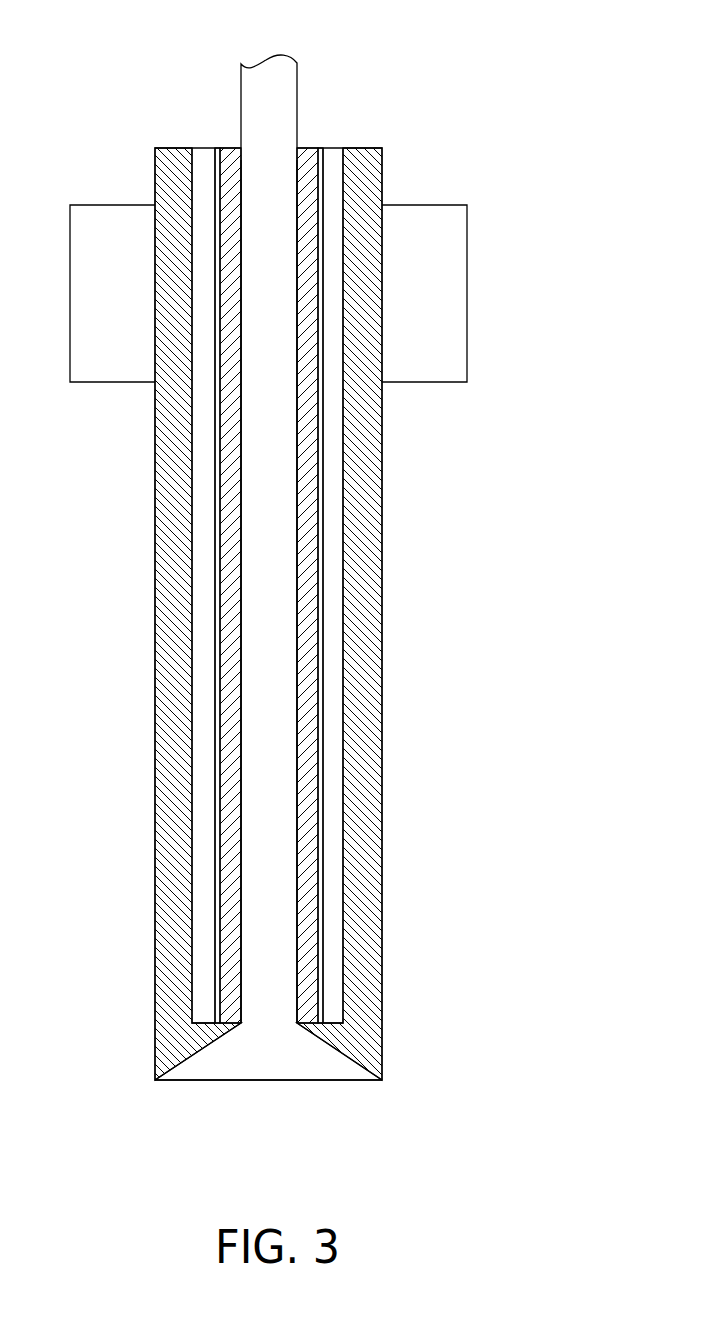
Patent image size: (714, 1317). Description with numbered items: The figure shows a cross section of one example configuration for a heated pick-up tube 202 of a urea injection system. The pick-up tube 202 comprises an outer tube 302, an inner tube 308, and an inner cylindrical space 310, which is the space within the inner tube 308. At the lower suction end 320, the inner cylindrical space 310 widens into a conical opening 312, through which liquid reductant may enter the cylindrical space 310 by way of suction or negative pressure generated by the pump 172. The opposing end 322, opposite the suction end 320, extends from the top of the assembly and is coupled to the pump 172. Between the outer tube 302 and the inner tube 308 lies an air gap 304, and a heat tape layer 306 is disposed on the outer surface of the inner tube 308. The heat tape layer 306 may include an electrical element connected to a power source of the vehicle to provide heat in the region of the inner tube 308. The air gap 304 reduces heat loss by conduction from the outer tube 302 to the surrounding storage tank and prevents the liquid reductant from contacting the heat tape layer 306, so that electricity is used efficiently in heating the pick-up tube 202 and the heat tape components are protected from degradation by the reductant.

The pump 172 is at (467, 315).
The pick-up tube 202 is at (353, 645).
The outer tube 302 is at (362, 580).
The air gap 304 is at (335, 673).
The heat tape layer 306 is at (322, 772).
The inner tube 308 is at (302, 877).
The inner cylindrical space 310 is at (270, 980).
The conical opening 312 is at (288, 1058).
The suction end 320 is at (336, 1103).
The opposing end 322 is at (256, 44).